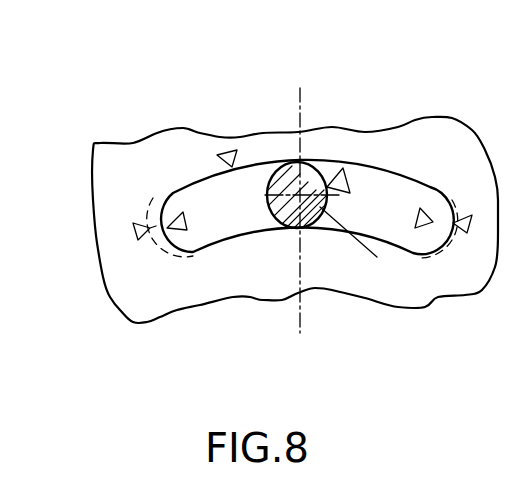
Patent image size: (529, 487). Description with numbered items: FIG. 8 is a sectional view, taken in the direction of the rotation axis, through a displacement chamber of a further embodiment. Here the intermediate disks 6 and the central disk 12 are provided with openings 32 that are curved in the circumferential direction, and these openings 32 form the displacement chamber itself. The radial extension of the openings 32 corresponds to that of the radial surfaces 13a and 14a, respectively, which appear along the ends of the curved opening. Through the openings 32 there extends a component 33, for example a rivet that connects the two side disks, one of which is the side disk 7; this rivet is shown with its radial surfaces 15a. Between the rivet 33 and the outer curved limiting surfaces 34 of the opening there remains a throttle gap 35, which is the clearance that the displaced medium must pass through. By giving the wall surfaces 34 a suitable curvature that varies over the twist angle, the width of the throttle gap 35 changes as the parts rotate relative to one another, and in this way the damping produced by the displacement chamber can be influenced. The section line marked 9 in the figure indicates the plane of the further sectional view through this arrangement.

The intermediate disks 6 is at (268, 245).
The central disk 12 is at (137, 280).
The openings 32 is at (230, 208).
The throttle gap 35 is at (270, 165).
The outer curved limiting surfaces 34 is at (234, 152).
The radial surfaces 13a is at (134, 222).
The radial surfaces 14a is at (182, 207).
The radial surfaces 15a is at (348, 160).
The component 33 is at (320, 207).
The section line 9- 9 is at (336, 329).
The side disk 7 is at (527, 372).